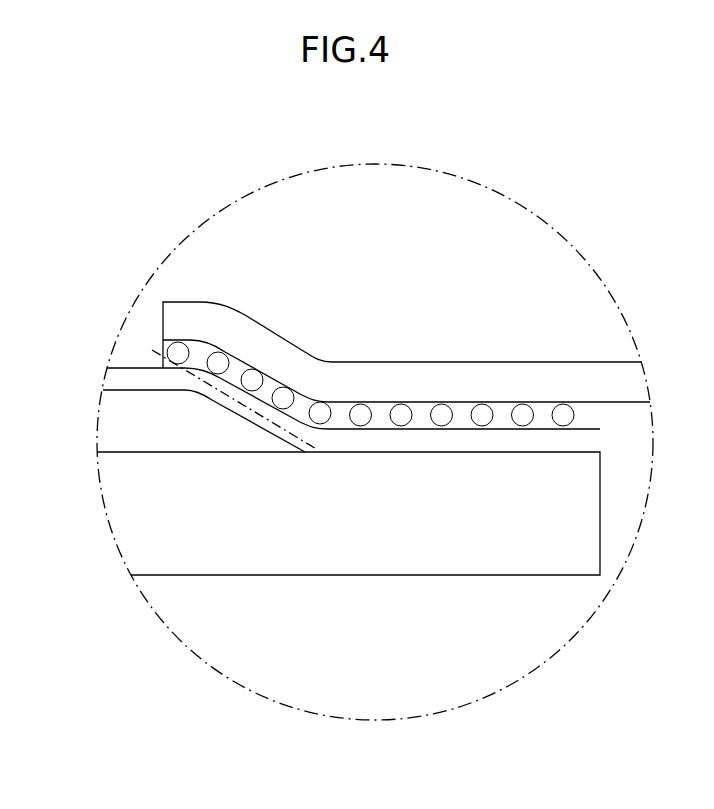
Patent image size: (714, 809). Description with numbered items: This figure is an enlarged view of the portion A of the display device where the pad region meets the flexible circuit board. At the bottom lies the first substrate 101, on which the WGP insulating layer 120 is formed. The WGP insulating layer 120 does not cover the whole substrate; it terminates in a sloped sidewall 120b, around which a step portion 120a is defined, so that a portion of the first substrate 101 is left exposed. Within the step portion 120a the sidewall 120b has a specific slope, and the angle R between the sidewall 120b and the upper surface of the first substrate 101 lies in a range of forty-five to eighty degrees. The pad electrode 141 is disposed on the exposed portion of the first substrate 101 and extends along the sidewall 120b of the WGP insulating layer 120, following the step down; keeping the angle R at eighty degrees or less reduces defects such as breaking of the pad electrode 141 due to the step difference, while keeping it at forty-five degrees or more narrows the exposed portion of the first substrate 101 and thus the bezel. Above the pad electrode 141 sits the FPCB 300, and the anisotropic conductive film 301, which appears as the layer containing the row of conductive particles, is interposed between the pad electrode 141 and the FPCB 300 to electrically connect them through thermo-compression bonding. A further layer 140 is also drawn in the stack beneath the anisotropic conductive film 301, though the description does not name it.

The portion A is at (455, 177).
The first substrate 101 is at (122, 523).
The WGP insulating layer 120 is at (187, 356).
The step portion 120a is at (199, 388).
The sidewall 120b is at (258, 424).
The adhesive layer 140 is at (138, 373).
The pad electrode 141 is at (388, 443).
The FPCB 300 is at (520, 372).
The anisotropic conductive film 301 is at (440, 402).
The angle R is at (235, 401).